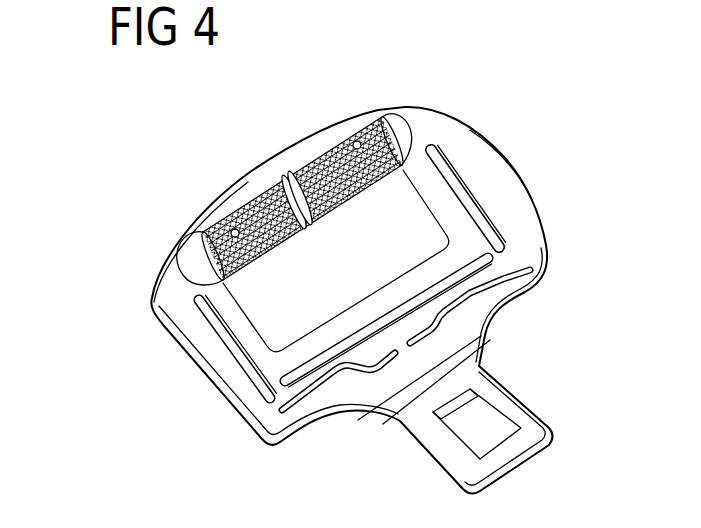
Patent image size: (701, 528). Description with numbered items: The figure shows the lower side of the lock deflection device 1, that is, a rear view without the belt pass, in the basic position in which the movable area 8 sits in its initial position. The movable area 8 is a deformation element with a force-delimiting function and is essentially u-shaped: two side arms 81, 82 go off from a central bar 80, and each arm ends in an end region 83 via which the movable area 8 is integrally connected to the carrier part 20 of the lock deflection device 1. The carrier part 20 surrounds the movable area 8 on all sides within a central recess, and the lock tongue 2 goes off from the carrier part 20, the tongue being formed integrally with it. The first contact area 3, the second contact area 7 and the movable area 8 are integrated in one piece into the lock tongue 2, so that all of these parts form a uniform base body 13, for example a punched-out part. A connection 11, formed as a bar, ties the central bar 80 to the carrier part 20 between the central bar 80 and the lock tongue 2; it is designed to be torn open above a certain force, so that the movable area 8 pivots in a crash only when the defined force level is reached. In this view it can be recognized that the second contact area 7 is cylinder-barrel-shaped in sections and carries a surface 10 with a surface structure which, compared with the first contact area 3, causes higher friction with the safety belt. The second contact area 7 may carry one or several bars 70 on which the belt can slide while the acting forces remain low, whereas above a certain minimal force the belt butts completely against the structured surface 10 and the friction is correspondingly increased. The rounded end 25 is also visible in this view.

The lock deflection device 1 is at (522, 180).
The lock tongue 2 is at (470, 450).
The first contact area 3 is at (330, 347).
The second contact area 7 is at (309, 226).
The movable area 8 is at (250, 323).
The surface 10 is at (227, 211).
The connection 11 is at (407, 340).
The base body 13 is at (157, 353).
The carrier part 20 is at (477, 160).
The rail end 25 is at (283, 393).
The bar 70 is at (287, 173).
The central bar 80 is at (425, 272).
The side arm 81 is at (450, 203).
The side arm 82 is at (247, 347).
The end region 83 is at (430, 172).